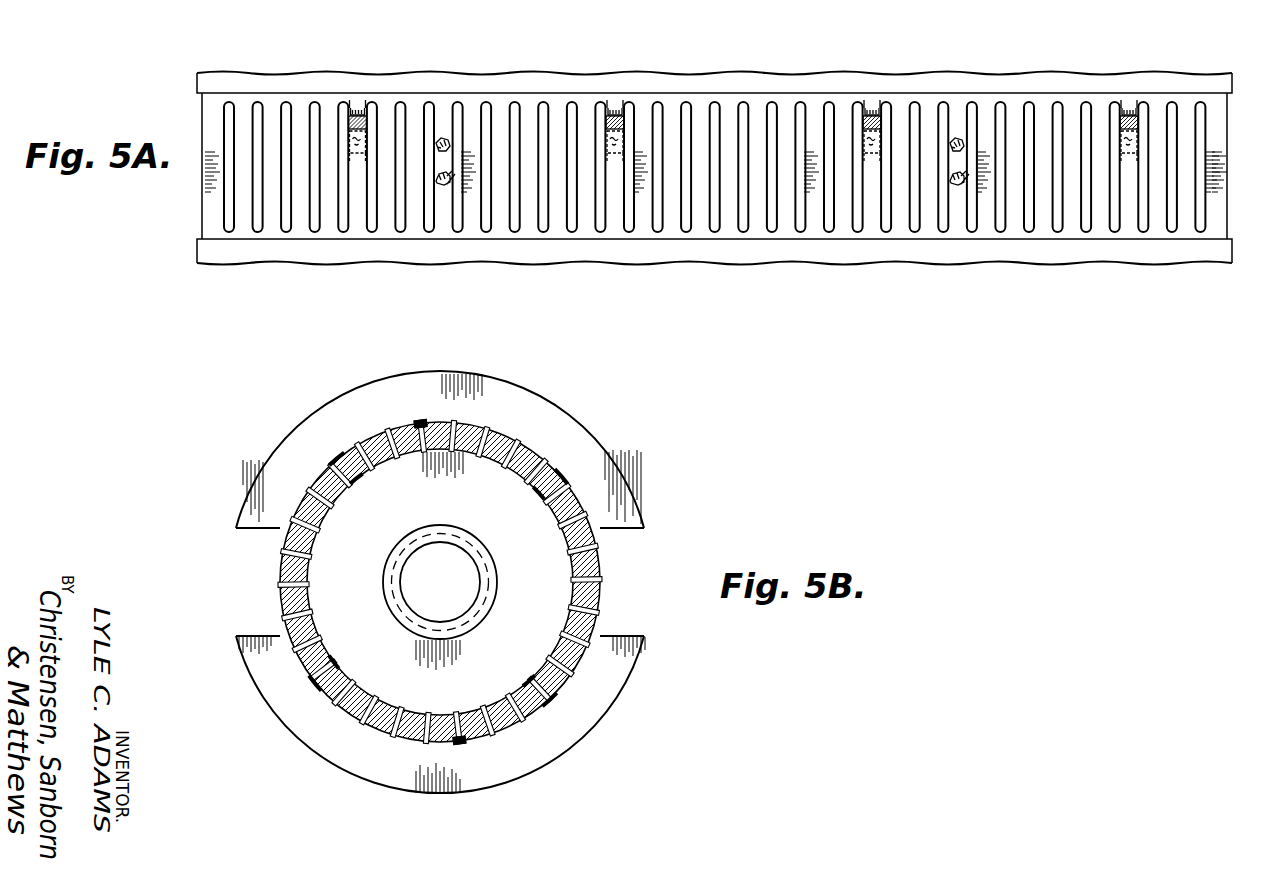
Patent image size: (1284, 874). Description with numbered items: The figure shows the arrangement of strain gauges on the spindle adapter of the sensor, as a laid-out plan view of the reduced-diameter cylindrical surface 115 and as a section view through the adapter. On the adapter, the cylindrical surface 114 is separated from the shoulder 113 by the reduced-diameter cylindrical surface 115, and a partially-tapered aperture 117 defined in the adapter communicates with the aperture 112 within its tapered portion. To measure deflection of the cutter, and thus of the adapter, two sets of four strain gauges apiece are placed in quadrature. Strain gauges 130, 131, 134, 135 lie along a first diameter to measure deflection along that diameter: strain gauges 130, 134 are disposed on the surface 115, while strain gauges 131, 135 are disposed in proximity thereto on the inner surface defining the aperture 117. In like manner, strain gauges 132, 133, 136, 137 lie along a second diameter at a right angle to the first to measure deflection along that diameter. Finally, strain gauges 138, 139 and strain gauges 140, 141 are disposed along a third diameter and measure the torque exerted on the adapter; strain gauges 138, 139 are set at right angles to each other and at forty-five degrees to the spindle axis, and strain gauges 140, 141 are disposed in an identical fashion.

In FIG. 5B, the aperture 112 is at (418, 583).
In FIG. 5A, the shoulder 113 is at (1232, 78).
In FIG. 5B, the shoulder 113 is at (568, 399).
In FIG. 5A, the cylindrical surface 114 is at (1232, 257).
In FIG. 5A, the reduced-diameter cylindrical surface 115 is at (1230, 173).
In FIG. 5B, the reduced-diameter cylindrical surface 115 is at (583, 498).
In FIG. 5B, the partially-tapered aperture 117 is at (553, 582).
In FIG. 5A, the strain gauge 130 is at (357, 100).
In FIG. 5B, the strain gauge 130 is at (335, 458).
In FIG. 5A, the strain gauge 131 is at (357, 162).
In FIG. 5B, the strain gauge 131 is at (357, 482).
In FIG. 5A, the strain gauge 132 is at (615, 100).
In FIG. 5B, the strain gauge 132 is at (565, 476).
In FIG. 5A, the strain gauge 133 is at (615, 162).
In FIG. 5B, the strain gauge 133 is at (540, 495).
In FIG. 5A, the strain gauge 134 is at (872, 100).
In FIG. 5B, the strain gauge 134 is at (548, 700).
In FIG. 5A, the strain gauge 135 is at (872, 162).
In FIG. 5B, the strain gauge 135 is at (528, 678).
In FIG. 5A, the strain gauge 136 is at (1129, 100).
In FIG. 5B, the strain gauge 136 is at (318, 683).
In FIG. 5A, the strain gauge 137 is at (1129, 162).
In FIG. 5B, the strain gauge 137 is at (384, 632).
In FIG. 5A, the strain gauge 138 is at (443, 194).
In FIG. 5B, the strain gauge 138 is at (420, 422).
In FIG. 5A, the strain gauge 139 is at (443, 130).
In FIG. 5B, the strain gauge 139 is at (420, 422).
In FIG. 5A, the strain gauge 140 is at (957, 194).
In FIG. 5B, the strain gauge 140 is at (470, 742).
In FIG. 5A, the strain gauge 141 is at (957, 130).
In FIG. 5B, the strain gauge 141 is at (470, 742).